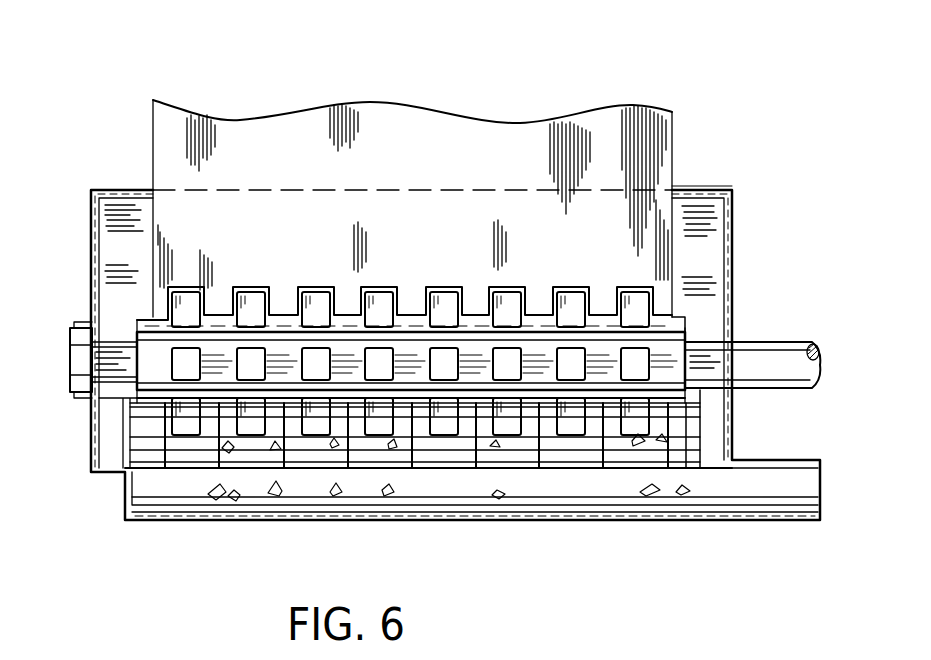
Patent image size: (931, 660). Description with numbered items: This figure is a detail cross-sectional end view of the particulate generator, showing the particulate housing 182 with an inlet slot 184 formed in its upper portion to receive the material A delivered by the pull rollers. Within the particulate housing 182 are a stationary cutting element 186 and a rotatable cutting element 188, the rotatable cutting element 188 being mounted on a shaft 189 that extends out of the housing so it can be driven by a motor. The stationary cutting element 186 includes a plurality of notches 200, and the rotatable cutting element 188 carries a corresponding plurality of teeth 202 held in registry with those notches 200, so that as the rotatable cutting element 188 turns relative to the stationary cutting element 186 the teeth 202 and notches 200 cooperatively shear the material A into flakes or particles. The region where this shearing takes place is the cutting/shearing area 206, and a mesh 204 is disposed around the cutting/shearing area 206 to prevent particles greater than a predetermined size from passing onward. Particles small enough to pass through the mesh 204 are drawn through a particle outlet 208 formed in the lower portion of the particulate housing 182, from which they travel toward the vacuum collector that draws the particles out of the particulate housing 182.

The material A is at (345, 108).
The particulate housing 182 is at (91, 297).
The inlet slot 184 is at (692, 180).
The stationary cutting element 186 is at (122, 243).
The rotatable cutting element 188 is at (690, 325).
The shaft 189 is at (755, 340).
The notches 200 is at (270, 279).
The teeth 202 is at (367, 288).
The mesh 204 is at (459, 477).
The cutting/shearing area 206 is at (715, 425).
The particle outlet 208 is at (801, 512).